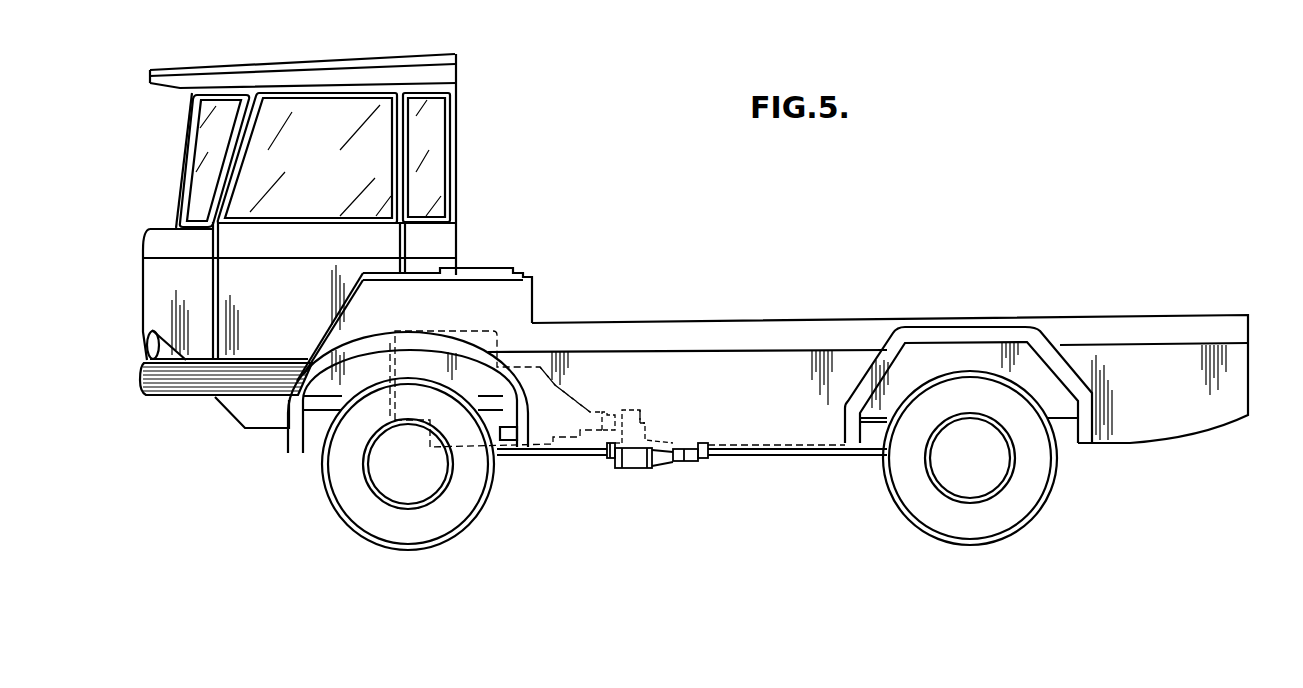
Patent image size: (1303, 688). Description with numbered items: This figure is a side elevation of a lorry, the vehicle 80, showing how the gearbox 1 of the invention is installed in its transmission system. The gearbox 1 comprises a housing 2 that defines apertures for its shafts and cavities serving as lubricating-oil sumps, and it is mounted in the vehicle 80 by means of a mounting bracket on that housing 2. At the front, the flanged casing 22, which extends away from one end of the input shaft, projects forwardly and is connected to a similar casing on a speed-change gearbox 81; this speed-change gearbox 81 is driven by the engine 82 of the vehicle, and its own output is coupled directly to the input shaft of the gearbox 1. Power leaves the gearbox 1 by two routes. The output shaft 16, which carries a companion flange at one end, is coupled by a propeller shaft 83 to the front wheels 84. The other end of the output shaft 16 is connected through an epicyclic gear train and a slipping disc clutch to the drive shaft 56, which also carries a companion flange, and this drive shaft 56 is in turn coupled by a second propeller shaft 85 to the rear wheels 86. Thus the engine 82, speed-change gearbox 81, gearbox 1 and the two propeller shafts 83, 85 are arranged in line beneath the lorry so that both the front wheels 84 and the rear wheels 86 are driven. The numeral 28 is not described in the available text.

The vehicle 80 is at (479, 226).
The engine 82 is at (463, 336).
The speed-change gearbox 81 is at (538, 380).
The propeller shaft 83 is at (563, 457).
The front wheels 84 is at (480, 507).
The propeller shaft 85 is at (797, 457).
The rear wheels 86 is at (922, 512).
The gearbox 1 is at (641, 474).
The output shaft 16 is at (613, 461).
The drive shaft 56 is at (700, 461).
The flanged casing 22 is at (613, 410).
The housing 2 is at (636, 410).
The stator 28 is at (647, 420).